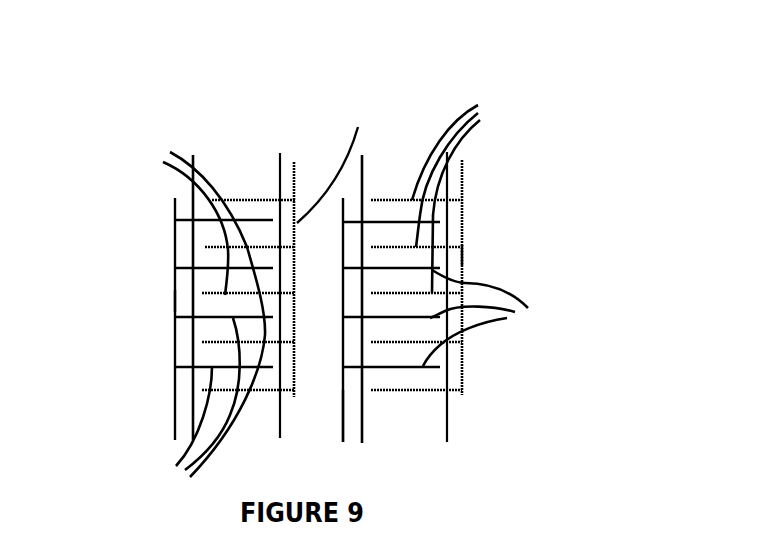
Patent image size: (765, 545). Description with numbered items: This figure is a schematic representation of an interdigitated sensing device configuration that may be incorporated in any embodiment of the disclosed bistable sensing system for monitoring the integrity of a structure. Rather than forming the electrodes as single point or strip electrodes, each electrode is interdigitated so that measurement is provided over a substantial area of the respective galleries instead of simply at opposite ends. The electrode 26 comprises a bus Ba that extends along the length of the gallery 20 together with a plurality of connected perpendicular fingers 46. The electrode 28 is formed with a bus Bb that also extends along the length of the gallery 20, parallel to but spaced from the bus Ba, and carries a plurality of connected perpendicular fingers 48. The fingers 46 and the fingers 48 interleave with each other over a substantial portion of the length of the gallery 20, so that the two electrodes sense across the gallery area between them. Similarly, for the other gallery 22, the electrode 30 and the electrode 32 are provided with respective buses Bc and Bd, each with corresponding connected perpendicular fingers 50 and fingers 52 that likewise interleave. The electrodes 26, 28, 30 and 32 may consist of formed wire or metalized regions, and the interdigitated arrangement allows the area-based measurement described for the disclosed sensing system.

The gallery 20 is at (229, 128).
The gallery 22 is at (409, 128).
The electrode 26 is at (325, 150).
The electrode 28 is at (140, 347).
The electrode 30 is at (503, 175).
The electrode 32 is at (343, 412).
The perpendicular fingers 46 is at (200, 306).
The perpendicular fingers 48 is at (192, 406).
The perpendicular fingers 50 is at (464, 192).
The perpendicular fingers 52 is at (485, 318).
The bus Ba is at (335, 160).
The bus Bb is at (173, 302).
The bus Bc is at (462, 255).
The bus Bd is at (347, 397).